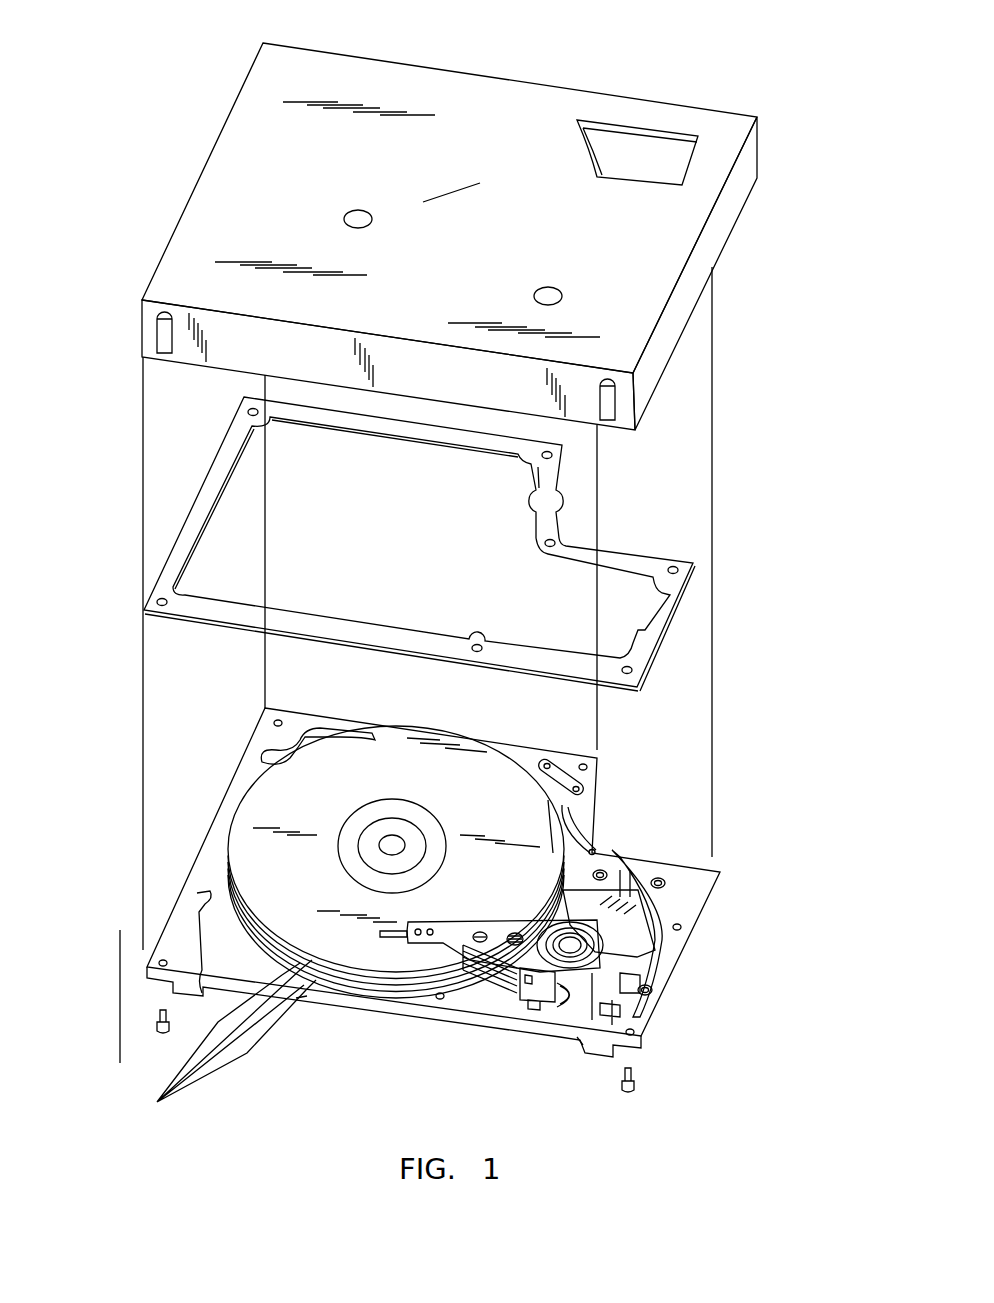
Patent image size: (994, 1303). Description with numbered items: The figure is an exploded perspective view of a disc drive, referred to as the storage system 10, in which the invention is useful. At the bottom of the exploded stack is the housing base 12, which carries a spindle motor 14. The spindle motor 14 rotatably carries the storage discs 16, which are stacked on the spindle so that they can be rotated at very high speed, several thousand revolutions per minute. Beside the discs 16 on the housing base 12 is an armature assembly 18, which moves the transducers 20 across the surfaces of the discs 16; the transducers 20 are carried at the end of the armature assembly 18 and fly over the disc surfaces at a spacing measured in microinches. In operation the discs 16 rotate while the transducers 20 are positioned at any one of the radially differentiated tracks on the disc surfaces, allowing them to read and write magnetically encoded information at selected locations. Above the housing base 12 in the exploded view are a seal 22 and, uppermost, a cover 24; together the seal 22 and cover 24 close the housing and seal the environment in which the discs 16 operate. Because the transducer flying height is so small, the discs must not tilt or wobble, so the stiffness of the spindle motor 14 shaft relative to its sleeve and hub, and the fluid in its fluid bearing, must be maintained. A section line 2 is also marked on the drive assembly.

The section line 2- 2 is at (453, 191).
The storage system 10 is at (765, 211).
The housing base 12 is at (653, 1013).
The spindle motor 14 is at (362, 847).
The storage discs 16 is at (214, 1052).
The armature assembly 18 is at (482, 988).
The transducers 20 is at (388, 942).
The seal 22 is at (668, 627).
The cover 24 is at (697, 305).